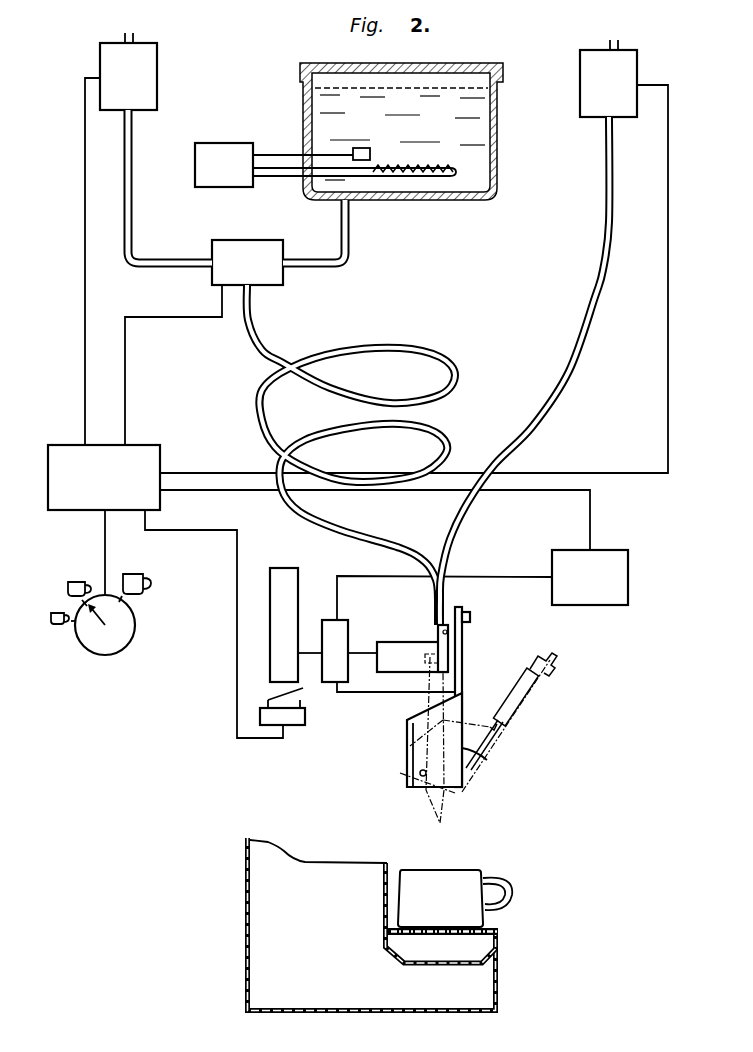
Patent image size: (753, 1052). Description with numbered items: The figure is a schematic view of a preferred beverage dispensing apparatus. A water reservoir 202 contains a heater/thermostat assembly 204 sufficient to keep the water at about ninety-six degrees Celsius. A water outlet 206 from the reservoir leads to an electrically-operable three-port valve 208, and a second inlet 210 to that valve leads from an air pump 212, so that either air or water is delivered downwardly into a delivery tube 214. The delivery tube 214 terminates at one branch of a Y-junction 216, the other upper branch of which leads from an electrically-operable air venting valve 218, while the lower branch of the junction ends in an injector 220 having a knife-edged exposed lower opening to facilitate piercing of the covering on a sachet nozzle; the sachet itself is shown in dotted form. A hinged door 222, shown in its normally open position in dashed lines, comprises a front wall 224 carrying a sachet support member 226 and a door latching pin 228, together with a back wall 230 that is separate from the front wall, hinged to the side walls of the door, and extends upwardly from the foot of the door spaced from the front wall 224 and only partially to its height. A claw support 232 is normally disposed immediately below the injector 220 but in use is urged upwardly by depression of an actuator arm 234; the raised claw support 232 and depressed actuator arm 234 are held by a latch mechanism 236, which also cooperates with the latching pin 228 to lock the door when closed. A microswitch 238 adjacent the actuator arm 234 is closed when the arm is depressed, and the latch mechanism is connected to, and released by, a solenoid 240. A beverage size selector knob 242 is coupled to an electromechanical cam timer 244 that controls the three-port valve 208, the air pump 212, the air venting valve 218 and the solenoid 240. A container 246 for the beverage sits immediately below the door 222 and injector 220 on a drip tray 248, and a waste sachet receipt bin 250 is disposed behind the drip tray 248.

The water reservoir 202 is at (478, 125).
The heater/thermostat assembly 204 is at (237, 154).
The water outlet 206 is at (349, 241).
The three-port valve 208 is at (262, 256).
The second inlet 210 is at (133, 212).
The air pump 212 is at (152, 75).
The delivery tube 214 is at (392, 346).
The Y-junction 216 is at (432, 553).
The air venting valve 218 is at (586, 66).
The injector 220 is at (447, 598).
The hinged door 222 is at (506, 738).
The front wall 224 is at (491, 762).
The sachet support member 226 is at (462, 655).
The door latching pin 228 is at (437, 628).
The back wall 230 is at (407, 737).
The claw support 232 is at (410, 658).
The actuator arm 234 is at (279, 575).
The latch mechanism 236 is at (331, 668).
The microswitch 238 is at (298, 727).
The solenoid 240 is at (610, 562).
The beverage size selector knob 242 is at (134, 622).
The electromechanical cam timer 244 is at (154, 448).
The container 246 is at (462, 883).
The drip tray 248 is at (486, 951).
The waste sachet receipt bin 250 is at (265, 941).